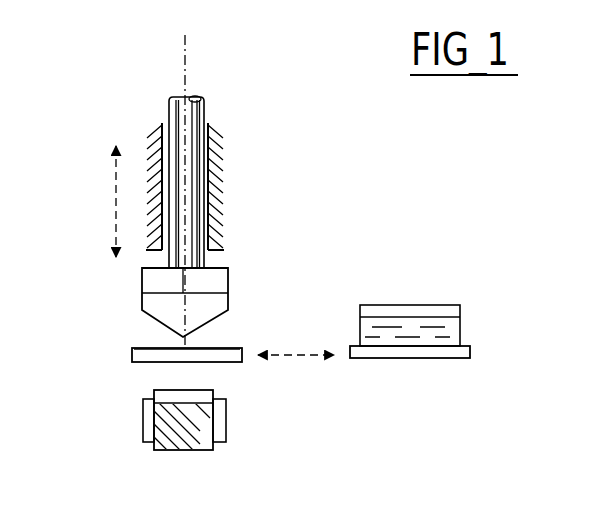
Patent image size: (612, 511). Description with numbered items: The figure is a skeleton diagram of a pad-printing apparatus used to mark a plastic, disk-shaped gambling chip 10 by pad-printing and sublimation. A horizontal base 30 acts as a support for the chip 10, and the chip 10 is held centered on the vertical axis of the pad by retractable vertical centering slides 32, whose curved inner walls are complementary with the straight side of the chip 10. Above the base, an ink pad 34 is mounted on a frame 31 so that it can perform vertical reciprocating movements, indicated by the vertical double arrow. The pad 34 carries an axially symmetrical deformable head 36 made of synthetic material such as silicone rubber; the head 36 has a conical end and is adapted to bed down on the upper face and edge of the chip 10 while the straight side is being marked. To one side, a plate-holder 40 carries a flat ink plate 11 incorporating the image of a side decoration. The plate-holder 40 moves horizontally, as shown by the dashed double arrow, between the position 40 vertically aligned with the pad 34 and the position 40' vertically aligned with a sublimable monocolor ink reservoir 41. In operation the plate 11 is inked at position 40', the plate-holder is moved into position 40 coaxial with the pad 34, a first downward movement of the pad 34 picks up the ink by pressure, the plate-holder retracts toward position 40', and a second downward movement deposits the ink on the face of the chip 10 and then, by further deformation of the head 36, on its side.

The gambling chip 10 is at (184, 420).
The flat ink plate 11 is at (147, 348).
The horizontal base 30 is at (188, 452).
The frame 31 is at (218, 162).
The retractable vertical centering slides 32 is at (227, 421).
The ink pad 34 is at (232, 257).
The deformable head 36 is at (217, 302).
The plate-holder 40 is at (230, 324).
The plate-holder position aligned with ink reservoir 40' is at (450, 318).
The sublimable monocolor ink reservoir 41 is at (440, 305).